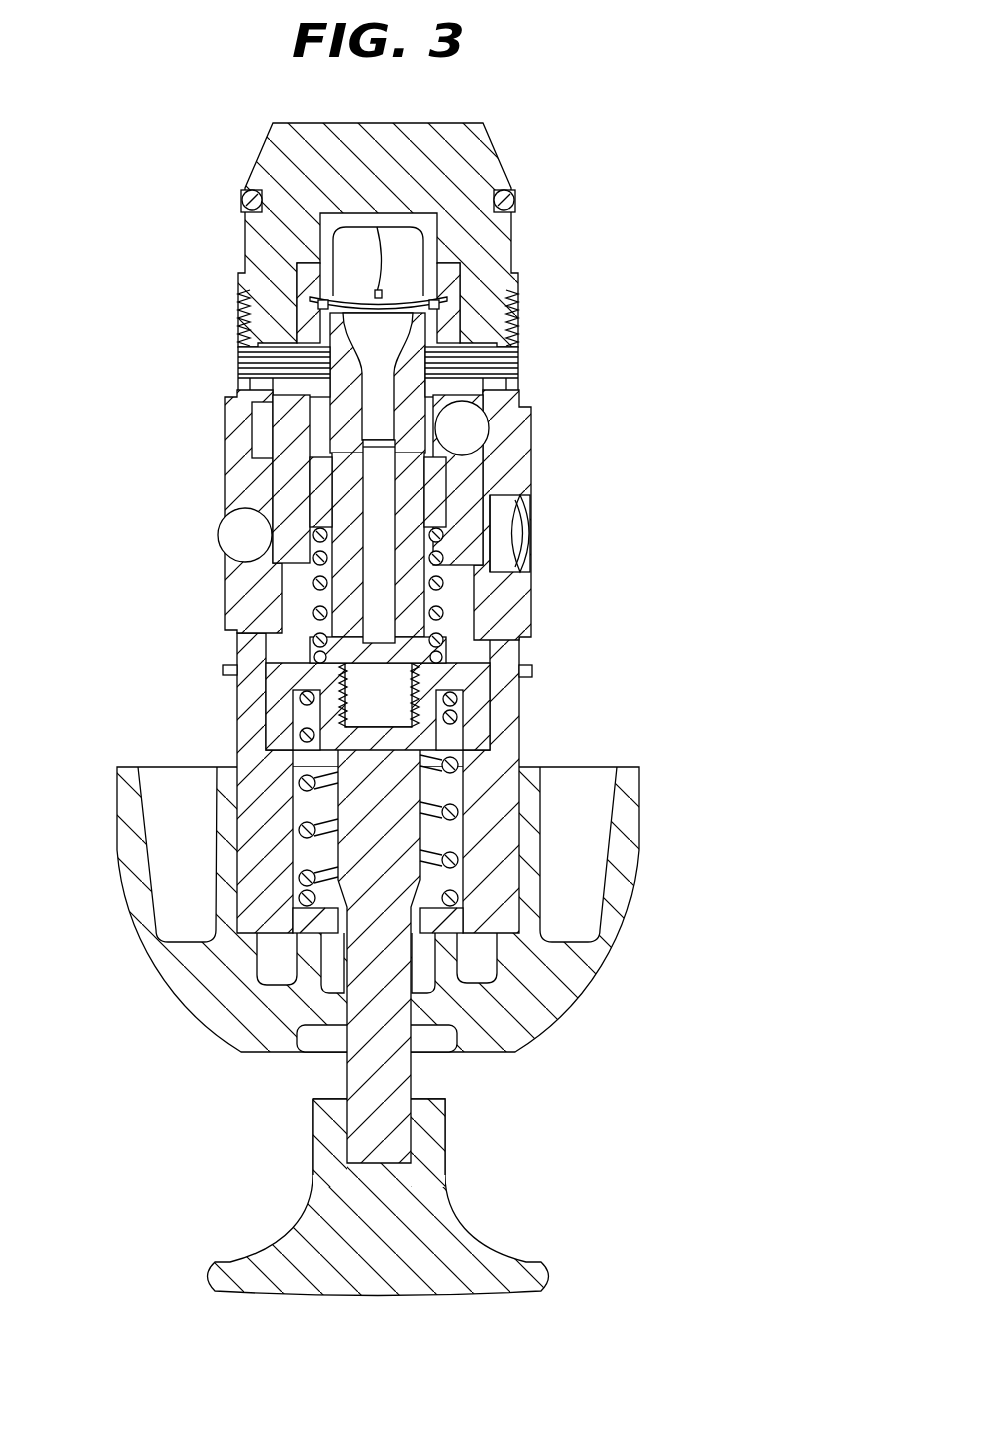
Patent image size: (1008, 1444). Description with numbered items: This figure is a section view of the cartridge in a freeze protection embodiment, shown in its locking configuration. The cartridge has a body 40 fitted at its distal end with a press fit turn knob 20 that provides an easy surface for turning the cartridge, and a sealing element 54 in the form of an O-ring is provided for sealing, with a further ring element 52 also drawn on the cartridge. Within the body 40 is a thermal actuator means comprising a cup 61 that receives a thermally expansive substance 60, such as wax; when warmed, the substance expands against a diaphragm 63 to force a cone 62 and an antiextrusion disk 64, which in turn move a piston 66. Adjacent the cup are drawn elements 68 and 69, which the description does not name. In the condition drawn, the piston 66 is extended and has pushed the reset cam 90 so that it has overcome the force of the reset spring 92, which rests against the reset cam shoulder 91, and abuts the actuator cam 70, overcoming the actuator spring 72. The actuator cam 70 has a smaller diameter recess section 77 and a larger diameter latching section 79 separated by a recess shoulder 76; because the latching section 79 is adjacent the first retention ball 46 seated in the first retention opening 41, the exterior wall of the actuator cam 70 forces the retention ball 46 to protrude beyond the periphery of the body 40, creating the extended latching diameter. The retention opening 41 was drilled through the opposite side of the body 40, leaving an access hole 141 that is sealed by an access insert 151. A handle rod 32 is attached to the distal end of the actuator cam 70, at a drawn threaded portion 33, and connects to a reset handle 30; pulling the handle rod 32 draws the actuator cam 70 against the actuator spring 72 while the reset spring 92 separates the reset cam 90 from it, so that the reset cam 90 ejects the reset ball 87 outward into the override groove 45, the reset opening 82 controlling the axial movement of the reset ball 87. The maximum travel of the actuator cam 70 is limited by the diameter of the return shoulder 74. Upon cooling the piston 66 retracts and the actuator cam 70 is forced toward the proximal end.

The turn knob 20 is at (592, 873).
The reset handle 30 is at (548, 1278).
The handle rod 32 is at (393, 1073).
The threaded portion 33 is at (388, 697).
The body 40 is at (507, 742).
The first retention opening 41 is at (280, 492).
The override groove 45 is at (262, 430).
The first retention ball 46 is at (237, 537).
The seal ring 52 is at (515, 200).
The sealing element 54 is at (241, 202).
The thermally expansive substance 60 is at (387, 255).
The cup 61 is at (297, 285).
The cone 62 is at (382, 336).
The diaphragm 63 is at (345, 215).
The antiextrusion disk 64 is at (455, 478).
The piston 66 is at (430, 625).
The flange 68 is at (300, 388).
The sleeve 69 is at (428, 318).
The actuator cam 70 is at (293, 663).
The actuator spring 72 is at (293, 740).
The return shoulder 74 is at (300, 708).
The recess shoulder 76 is at (262, 598).
The recess section 77 is at (293, 625).
The latching section 79 is at (265, 458).
The reset opening 82 is at (470, 428).
The second reset ball 87 is at (510, 357).
The reset cam 90 is at (435, 648).
The reset cam shoulder 91 is at (335, 495).
The reset spring 92 is at (443, 600).
The access hole 141 is at (495, 537).
The access insert 151 is at (523, 520).